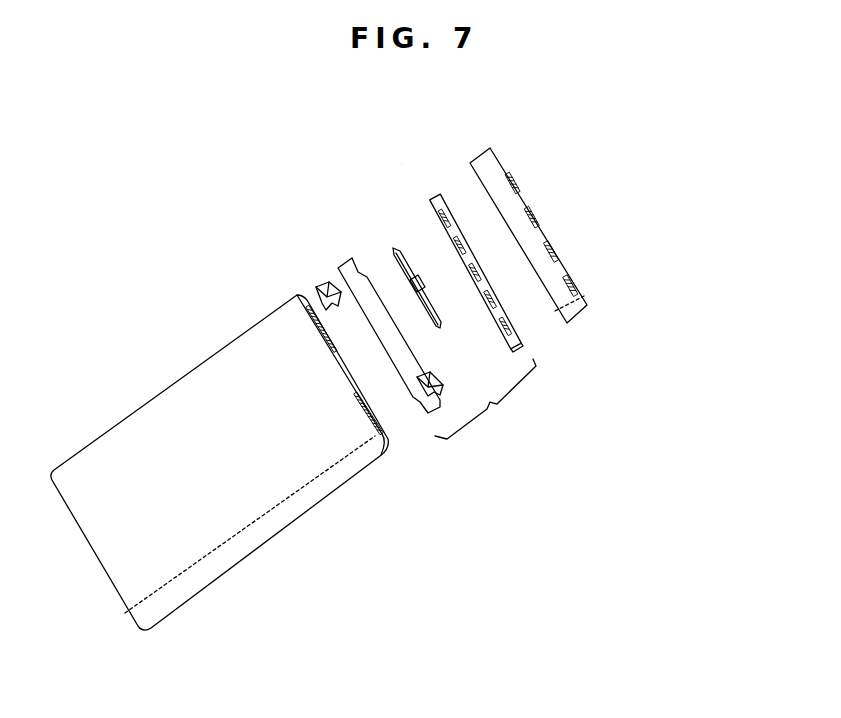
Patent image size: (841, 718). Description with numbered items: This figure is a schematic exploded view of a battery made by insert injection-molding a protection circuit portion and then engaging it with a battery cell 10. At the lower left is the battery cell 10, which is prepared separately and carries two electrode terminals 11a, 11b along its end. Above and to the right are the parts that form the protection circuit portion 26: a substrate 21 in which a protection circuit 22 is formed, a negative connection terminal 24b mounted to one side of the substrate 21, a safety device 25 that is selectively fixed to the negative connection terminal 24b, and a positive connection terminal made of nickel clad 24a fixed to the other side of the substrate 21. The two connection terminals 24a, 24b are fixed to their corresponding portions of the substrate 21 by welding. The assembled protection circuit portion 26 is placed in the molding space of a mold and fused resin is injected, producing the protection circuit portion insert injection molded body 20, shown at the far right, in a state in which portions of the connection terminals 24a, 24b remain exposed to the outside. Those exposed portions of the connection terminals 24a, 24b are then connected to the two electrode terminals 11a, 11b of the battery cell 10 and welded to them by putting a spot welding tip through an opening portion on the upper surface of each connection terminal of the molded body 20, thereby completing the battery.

The battery cell 10 is at (247, 543).
The electrode terminal 11a is at (380, 454).
The electrode terminal 11b is at (320, 335).
The protection circuit portion insert injection molded body 20 is at (402, 164).
The substrate 21 is at (443, 222).
The protection circuit 22 is at (453, 255).
The positive connection terminal made of nickel clad 24a is at (400, 348).
The negative connection terminal 24b is at (318, 290).
The safety device 25 is at (420, 282).
The protection circuit portion 26 is at (580, 118).